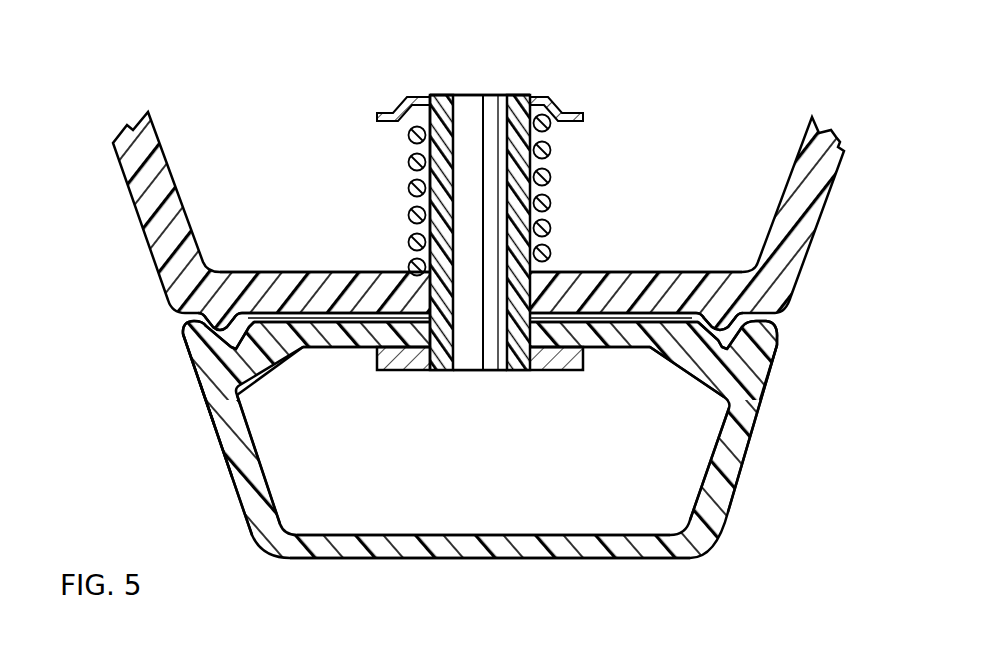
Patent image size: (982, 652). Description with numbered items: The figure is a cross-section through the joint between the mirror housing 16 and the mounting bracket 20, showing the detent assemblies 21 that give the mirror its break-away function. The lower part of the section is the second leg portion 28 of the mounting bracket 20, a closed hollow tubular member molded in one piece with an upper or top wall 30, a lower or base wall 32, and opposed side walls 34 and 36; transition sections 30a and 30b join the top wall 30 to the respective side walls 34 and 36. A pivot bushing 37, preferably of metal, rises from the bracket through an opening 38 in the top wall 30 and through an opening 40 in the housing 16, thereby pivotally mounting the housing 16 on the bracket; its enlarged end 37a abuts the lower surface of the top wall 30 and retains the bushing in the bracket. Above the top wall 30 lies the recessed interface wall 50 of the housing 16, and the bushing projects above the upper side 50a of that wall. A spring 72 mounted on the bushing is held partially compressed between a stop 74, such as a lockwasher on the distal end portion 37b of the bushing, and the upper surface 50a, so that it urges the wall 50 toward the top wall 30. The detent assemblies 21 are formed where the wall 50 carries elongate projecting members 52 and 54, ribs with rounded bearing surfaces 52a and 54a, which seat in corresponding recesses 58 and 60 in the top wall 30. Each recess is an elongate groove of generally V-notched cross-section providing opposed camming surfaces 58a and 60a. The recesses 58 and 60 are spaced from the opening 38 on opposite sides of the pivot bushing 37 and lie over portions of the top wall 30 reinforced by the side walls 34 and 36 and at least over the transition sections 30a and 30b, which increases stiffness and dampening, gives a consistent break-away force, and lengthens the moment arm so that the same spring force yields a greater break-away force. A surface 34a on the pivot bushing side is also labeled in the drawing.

The housing 16 is at (480, 238).
The mounting bracket 20 is at (489, 471).
The detent assemblies 21 is at (160, 322).
The second leg portion 28 is at (227, 463).
The upper or top wall 30 is at (612, 338).
The transition section 30a is at (258, 350).
The transition section 30b is at (677, 363).
The lower or base wall 32 is at (556, 553).
The side wall 34 is at (230, 487).
The tube wall surface 34a is at (425, 150).
The side wall 36 is at (732, 460).
The pivot bushing 37 is at (462, 221).
The enlarged end 37a is at (377, 352).
The distal end portion 37b is at (533, 95).
The opening 38 is at (510, 350).
The opening 40 is at (441, 300).
The interface wall 50 is at (313, 280).
The upper side 50a is at (620, 272).
The projecting member 52 is at (772, 341).
The bearing surface 52a is at (760, 363).
The projecting member 54 is at (192, 335).
The bearing surface 54a is at (227, 367).
The recess 58 is at (722, 352).
The camming surfaces 58a is at (757, 395).
The recess 60 is at (258, 318).
The camming surfaces 60a is at (234, 347).
The spring 72 is at (552, 178).
The stop 74 is at (583, 115).